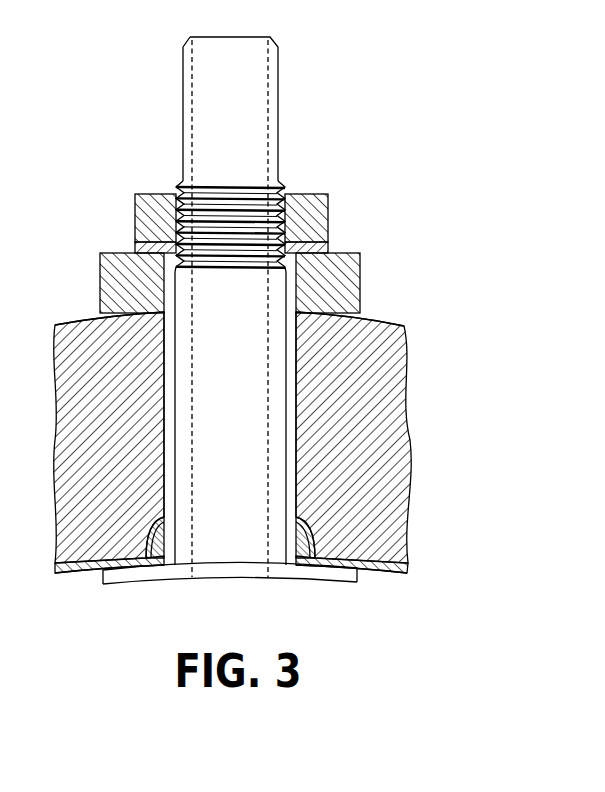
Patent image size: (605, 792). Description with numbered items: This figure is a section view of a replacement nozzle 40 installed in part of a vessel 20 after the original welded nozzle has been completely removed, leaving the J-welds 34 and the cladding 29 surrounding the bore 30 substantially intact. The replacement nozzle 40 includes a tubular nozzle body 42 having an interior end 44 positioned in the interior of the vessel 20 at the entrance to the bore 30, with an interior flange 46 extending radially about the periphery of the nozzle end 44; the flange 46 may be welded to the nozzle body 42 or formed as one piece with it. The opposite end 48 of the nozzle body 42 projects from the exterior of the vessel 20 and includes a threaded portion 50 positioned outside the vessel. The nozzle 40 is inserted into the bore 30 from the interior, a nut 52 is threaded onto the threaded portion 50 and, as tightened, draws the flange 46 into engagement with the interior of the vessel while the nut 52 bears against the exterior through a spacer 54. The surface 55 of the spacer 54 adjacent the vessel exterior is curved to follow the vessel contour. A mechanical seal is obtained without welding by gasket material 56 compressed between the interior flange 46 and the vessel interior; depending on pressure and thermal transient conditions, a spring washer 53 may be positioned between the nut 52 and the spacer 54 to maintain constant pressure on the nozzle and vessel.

The vessel 20 is at (389, 451).
The cladding 29 is at (388, 573).
The bore 30 is at (292, 345).
The J-welds 34 is at (153, 550).
The replacement nozzle 40 is at (289, 141).
The tubular nozzle body 42 is at (253, 305).
The interior end 44 is at (227, 560).
The interior flange 46 is at (242, 576).
The opposite end 48 is at (192, 82).
The threaded portion 50 is at (178, 190).
The nut 52 is at (138, 222).
The washer 53 is at (137, 247).
The spacer 54 is at (116, 284).
The surface of spacer 55 is at (118, 313).
The gasket material 56 is at (103, 569).